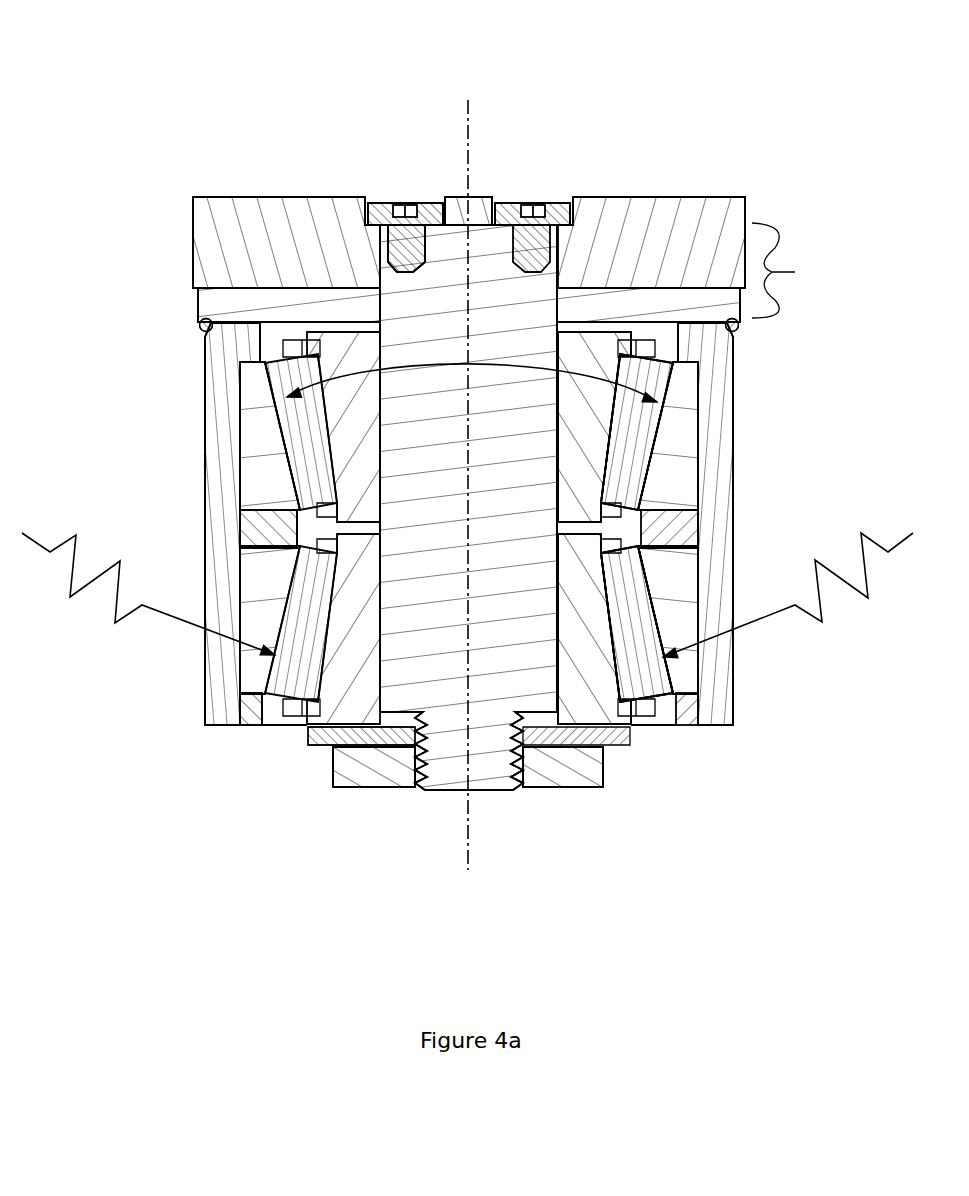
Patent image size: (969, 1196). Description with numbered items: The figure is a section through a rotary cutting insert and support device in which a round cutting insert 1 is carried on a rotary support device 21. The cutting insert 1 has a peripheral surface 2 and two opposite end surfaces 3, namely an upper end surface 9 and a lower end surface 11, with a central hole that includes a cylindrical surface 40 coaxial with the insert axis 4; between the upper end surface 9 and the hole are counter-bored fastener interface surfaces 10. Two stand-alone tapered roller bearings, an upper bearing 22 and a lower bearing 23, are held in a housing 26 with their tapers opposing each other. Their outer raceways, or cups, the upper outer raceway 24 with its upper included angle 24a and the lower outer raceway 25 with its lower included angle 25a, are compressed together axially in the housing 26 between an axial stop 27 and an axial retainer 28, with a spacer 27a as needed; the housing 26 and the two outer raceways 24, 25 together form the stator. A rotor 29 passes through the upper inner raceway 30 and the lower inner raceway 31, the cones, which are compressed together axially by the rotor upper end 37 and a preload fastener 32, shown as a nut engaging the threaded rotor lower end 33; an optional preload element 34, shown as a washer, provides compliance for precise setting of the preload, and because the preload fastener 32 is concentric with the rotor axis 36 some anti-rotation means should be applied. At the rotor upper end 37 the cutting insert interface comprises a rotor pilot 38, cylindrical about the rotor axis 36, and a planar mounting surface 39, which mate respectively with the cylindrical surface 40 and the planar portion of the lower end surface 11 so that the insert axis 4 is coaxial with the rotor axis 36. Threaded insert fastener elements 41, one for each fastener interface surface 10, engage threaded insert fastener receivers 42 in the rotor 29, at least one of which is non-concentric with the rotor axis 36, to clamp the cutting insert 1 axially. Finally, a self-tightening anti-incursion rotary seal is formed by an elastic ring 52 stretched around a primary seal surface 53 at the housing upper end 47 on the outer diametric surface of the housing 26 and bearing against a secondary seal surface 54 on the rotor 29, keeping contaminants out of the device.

The cutting insert 1 is at (717, 223).
The peripheral surface 2 is at (312, 287).
The end surface 3 is at (338, 288).
The upper end surface 9 is at (229, 201).
The lower end surface 11 is at (382, 262).
The rotor pilot 38 is at (265, 292).
The fastener interface surface 10 is at (372, 200).
The threaded insert fastener element 41 is at (430, 203).
The threaded insert fastener receiver 42 is at (460, 203).
The cylindrical surface 40 is at (473, 200).
The rotor upper end 37 is at (790, 270).
The rotor 29 is at (440, 358).
The elastic ring 52 is at (203, 326).
The housing upper end 47 is at (225, 340).
The axial stop 27 is at (235, 348).
The spacer 27a is at (255, 538).
The rotary support device 21 is at (173, 292).
The axial retainer 28 is at (250, 717).
The preload element 34 is at (318, 737).
The preload fastener 32 is at (375, 777).
The rotor lower end 33 is at (500, 770).
The insert axis 4 is at (474, 860).
The rotor axis 36 is at (533, 500).
The upper included angle 24a is at (590, 353).
The upper inner raceway 30 is at (545, 265).
The planar mounting surface 39 is at (678, 287).
The secondary seal surface 54 is at (740, 328).
The primary seal surface 53 is at (727, 337).
The upper outer raceway 24 is at (680, 417).
The upper bearing 22 is at (618, 490).
The housing 26 is at (720, 545).
The lower included angle 25a is at (700, 614).
The lower outer raceway 25 is at (663, 607).
The lower bearing 23 is at (678, 692).
The lower inner raceway 31 is at (587, 693).